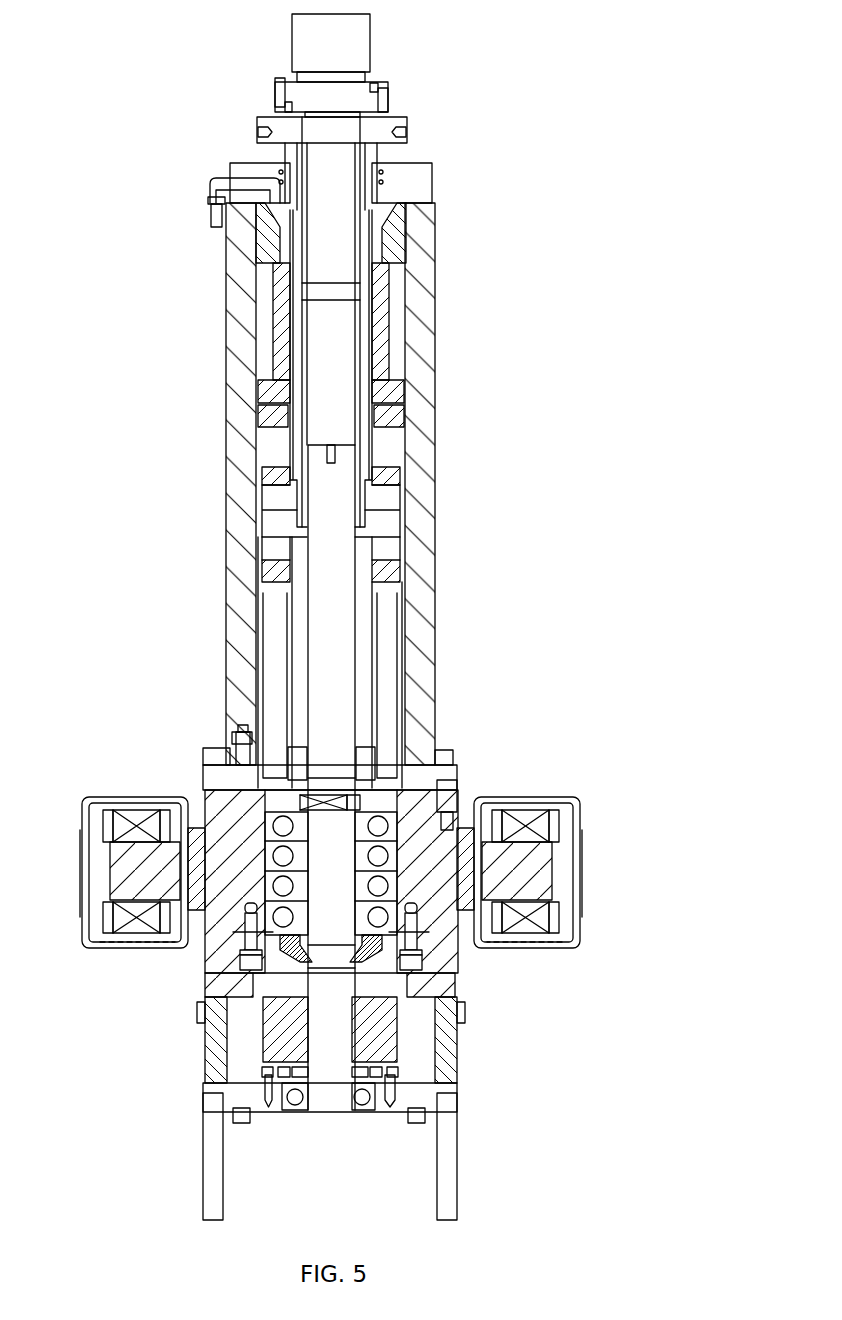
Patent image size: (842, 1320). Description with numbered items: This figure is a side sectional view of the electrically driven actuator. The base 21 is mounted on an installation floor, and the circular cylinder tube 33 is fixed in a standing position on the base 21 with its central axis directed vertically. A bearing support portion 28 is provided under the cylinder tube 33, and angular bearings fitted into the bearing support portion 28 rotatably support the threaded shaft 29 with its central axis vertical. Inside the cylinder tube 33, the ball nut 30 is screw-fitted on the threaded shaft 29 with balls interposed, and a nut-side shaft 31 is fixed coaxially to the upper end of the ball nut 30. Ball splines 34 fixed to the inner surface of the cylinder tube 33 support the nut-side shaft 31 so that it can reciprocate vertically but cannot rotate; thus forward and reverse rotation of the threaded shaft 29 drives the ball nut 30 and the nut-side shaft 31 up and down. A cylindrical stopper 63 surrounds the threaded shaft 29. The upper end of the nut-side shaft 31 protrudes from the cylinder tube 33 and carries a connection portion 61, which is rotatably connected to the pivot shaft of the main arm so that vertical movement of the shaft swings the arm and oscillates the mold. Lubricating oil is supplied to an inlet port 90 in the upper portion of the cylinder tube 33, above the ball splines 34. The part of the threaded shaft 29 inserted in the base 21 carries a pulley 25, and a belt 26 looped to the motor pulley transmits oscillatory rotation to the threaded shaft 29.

The connection portion 61 is at (355, 45).
The inlet port 90 is at (228, 197).
The ball splines 34 is at (377, 332).
The nut-side shaft 31 is at (340, 378).
The cylinder tube 33 is at (418, 500).
The ball nut 30 is at (360, 592).
The threaded shaft 29 is at (333, 642).
The cylindrical stopper 63 is at (390, 683).
The bearing support portion 28 is at (425, 862).
The base 21 is at (447, 1032).
The belt 26 is at (400, 1042).
The pulley 25 is at (372, 1112).